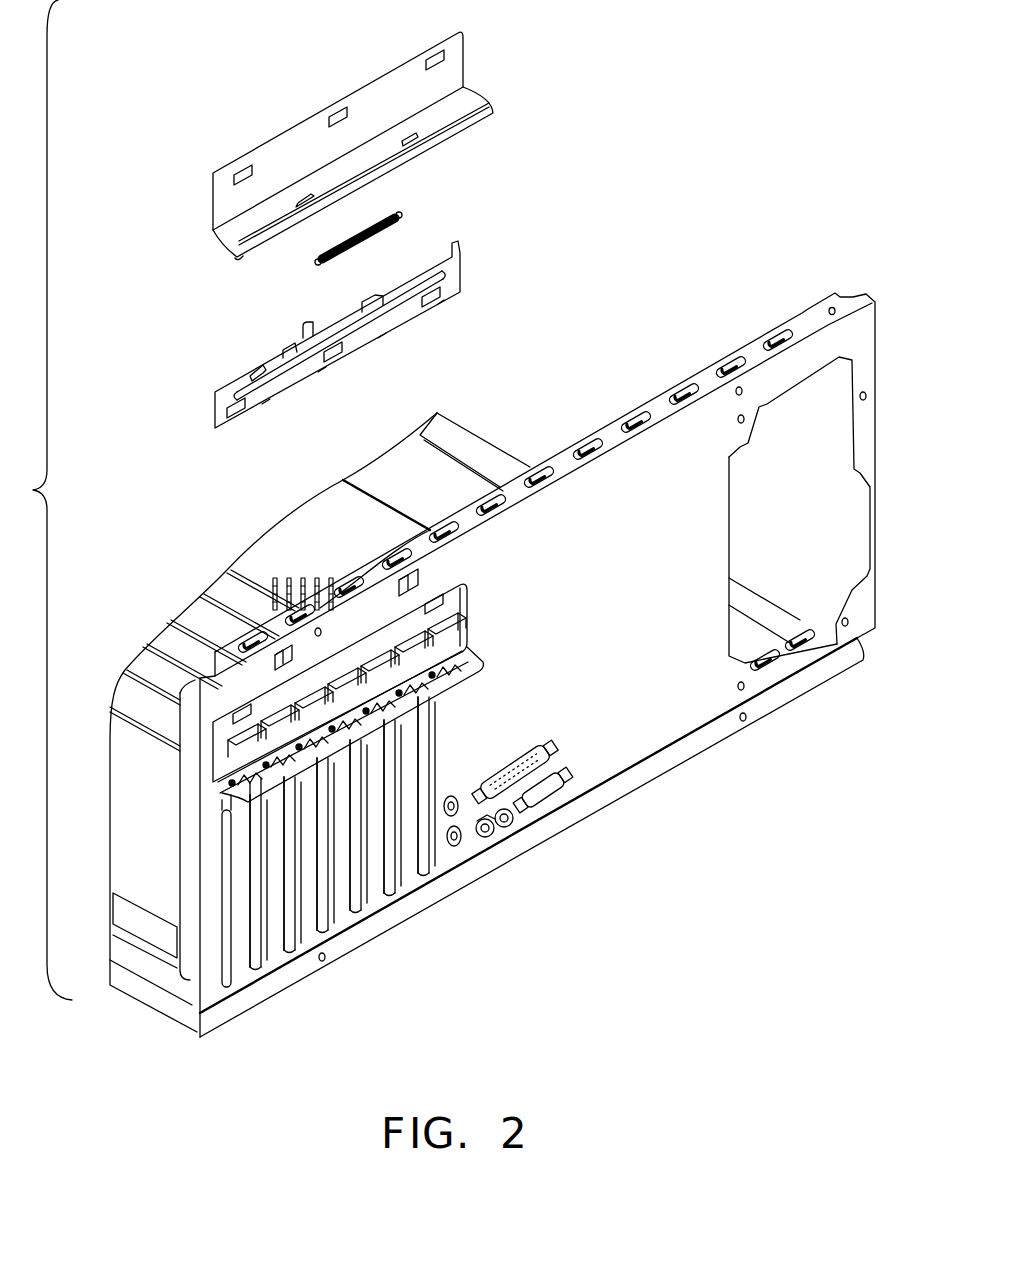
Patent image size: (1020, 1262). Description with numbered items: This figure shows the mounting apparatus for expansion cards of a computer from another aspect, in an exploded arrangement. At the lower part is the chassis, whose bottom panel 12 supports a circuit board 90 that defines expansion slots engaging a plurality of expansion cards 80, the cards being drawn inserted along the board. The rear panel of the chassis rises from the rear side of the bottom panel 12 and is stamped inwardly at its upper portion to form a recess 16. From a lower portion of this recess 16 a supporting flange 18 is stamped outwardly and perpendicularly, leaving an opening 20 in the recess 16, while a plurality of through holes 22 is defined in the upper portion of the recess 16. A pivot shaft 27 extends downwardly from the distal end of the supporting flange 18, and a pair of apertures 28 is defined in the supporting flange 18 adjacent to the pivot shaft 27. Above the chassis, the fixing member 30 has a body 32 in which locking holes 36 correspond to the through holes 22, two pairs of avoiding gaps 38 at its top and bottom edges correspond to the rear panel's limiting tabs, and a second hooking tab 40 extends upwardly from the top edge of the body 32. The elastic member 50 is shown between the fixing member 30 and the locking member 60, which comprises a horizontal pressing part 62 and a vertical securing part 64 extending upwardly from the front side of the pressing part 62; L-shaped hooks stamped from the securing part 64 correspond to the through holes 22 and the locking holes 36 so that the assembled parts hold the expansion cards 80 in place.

The bottom panel 12 is at (440, 478).
The recess 16 is at (220, 733).
The supporting flange 18 is at (465, 663).
The opening 20 is at (402, 696).
The through holes 22 is at (247, 713).
The pivot shaft 27 is at (248, 801).
The apertures 28 is at (305, 757).
The fixing member 30 is at (357, 334).
The body 32 is at (400, 315).
The locking holes 36 is at (455, 298).
The avoiding gaps 38 is at (262, 368).
The second hooking tab 40 is at (301, 333).
The elastic member 50 is at (402, 216).
The locking member 60 is at (393, 135).
The pressing part 62 is at (465, 100).
The securing part 64 is at (388, 95).
The expansion cards 80 is at (185, 622).
The circuit board 90 is at (273, 722).